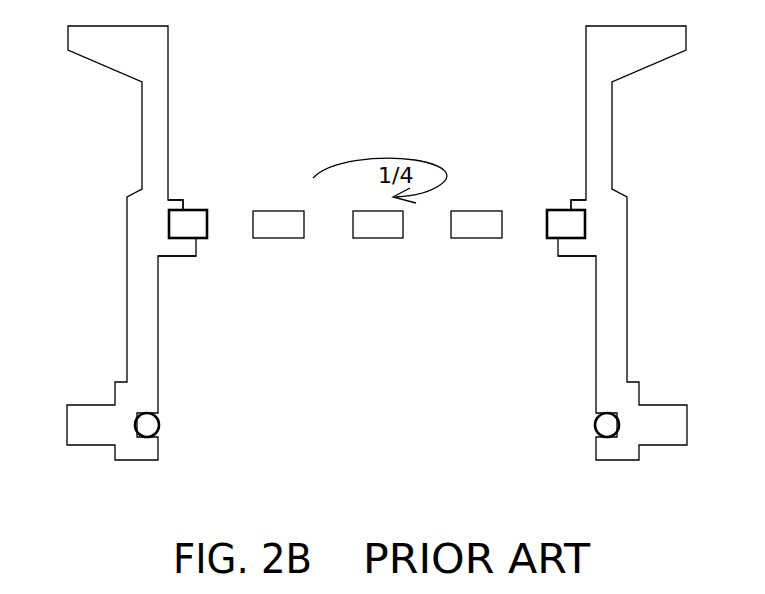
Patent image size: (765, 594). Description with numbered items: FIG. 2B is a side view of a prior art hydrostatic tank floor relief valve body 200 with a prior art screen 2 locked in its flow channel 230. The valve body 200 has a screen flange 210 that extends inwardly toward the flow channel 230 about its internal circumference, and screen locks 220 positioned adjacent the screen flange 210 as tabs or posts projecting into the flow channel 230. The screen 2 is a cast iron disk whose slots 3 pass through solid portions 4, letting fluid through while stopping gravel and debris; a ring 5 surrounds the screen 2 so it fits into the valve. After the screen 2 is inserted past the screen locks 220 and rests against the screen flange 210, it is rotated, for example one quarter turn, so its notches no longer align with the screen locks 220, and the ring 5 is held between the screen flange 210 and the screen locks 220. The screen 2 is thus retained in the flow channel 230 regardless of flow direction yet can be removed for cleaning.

The hydrostatic tank floor relief valve body 200 is at (127, 342).
The screen flange 210 is at (183, 258).
The screen locks 220 is at (176, 197).
The flow channel 230 is at (402, 98).
The prior art screen 2 is at (382, 239).
The slots 3 is at (377, 225).
The solid portions 4 is at (271, 235).
The ring 5 is at (181, 235).